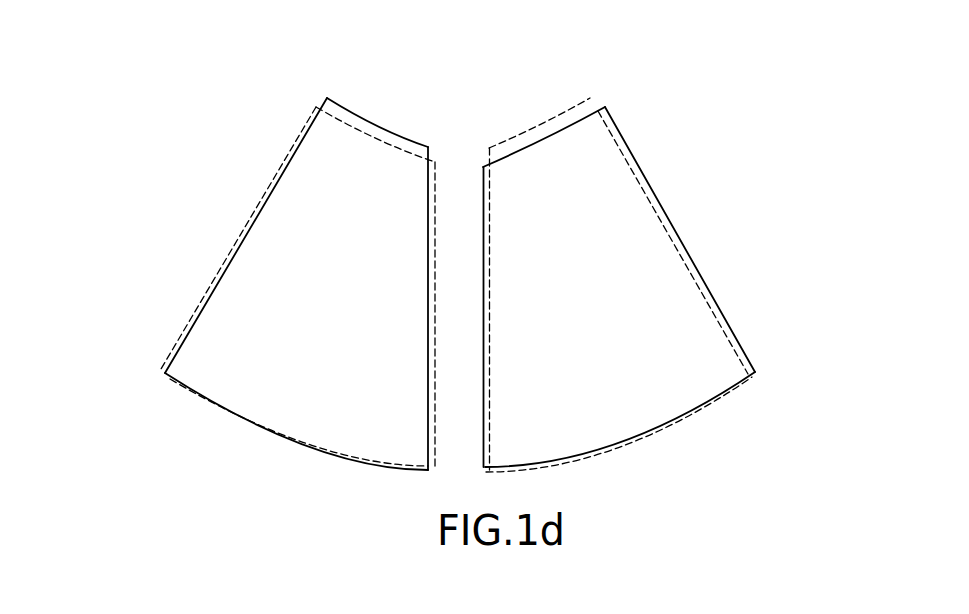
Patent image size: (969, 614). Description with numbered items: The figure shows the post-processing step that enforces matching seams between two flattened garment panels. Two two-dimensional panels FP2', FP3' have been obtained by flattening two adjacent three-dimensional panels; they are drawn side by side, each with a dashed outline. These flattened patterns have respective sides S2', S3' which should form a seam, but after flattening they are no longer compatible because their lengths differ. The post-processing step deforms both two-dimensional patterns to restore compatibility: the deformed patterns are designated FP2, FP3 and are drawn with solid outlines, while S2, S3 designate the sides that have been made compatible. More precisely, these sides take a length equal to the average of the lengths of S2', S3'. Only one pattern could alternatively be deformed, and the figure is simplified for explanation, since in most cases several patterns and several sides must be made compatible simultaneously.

The deformed 2D pattern FP3 is at (315, 248).
The 2D panel FP3' is at (256, 199).
The side S3' is at (384, 118).
The side S3 is at (449, 308).
The deformed 2D pattern FP2 is at (615, 245).
The side S2' is at (540, 115).
The 2D panel FP2' is at (676, 236).
The side S2 is at (522, 309).